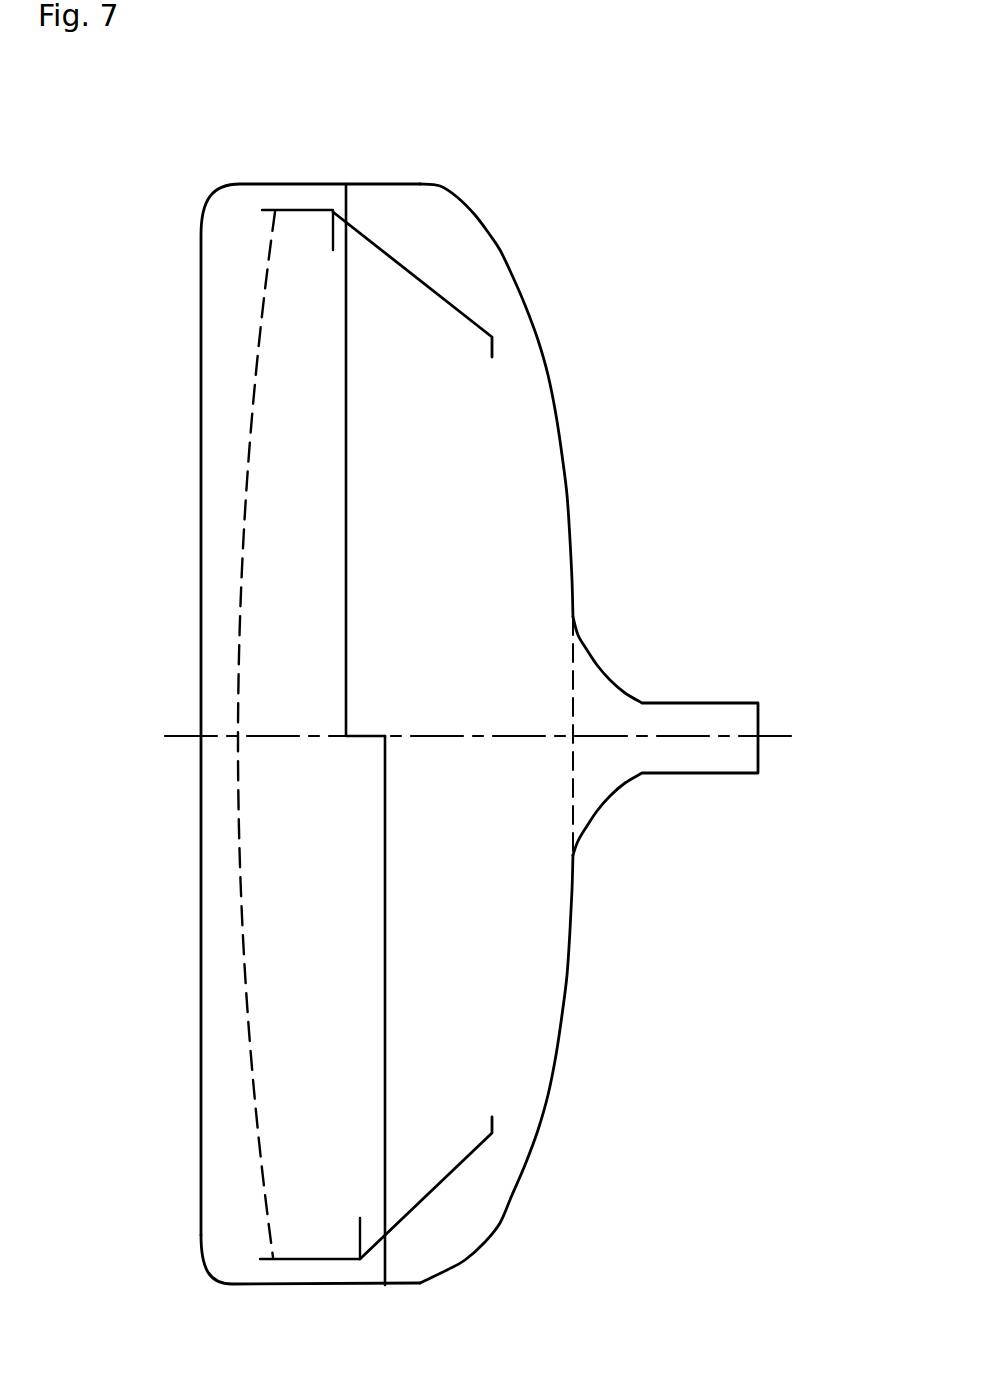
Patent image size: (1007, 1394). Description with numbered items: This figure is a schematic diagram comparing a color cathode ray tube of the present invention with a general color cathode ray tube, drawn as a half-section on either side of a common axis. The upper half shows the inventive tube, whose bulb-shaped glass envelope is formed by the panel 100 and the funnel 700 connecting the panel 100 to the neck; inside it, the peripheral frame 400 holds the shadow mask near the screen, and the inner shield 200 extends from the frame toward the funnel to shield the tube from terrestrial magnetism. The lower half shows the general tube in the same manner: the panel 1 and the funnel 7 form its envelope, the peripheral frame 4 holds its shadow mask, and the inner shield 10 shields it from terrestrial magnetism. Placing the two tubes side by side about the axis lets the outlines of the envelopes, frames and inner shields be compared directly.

The panel 1 is at (258, 1275).
The peripheral frame 4 is at (308, 1260).
The funnel 7 is at (500, 1225).
The inner shield 10 is at (410, 1213).
The panel 100 is at (258, 193).
The inner shield 200 is at (410, 260).
The peripheral frame 400 is at (308, 213).
The funnel 700 is at (500, 247).